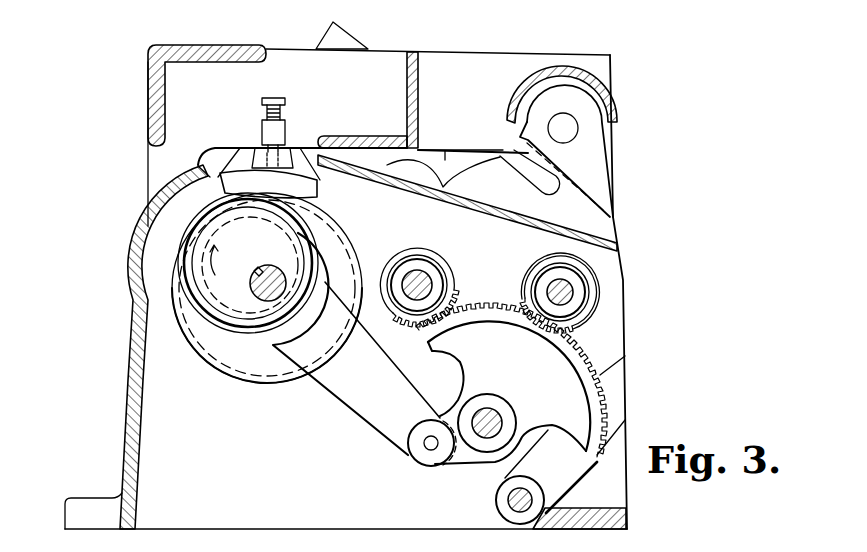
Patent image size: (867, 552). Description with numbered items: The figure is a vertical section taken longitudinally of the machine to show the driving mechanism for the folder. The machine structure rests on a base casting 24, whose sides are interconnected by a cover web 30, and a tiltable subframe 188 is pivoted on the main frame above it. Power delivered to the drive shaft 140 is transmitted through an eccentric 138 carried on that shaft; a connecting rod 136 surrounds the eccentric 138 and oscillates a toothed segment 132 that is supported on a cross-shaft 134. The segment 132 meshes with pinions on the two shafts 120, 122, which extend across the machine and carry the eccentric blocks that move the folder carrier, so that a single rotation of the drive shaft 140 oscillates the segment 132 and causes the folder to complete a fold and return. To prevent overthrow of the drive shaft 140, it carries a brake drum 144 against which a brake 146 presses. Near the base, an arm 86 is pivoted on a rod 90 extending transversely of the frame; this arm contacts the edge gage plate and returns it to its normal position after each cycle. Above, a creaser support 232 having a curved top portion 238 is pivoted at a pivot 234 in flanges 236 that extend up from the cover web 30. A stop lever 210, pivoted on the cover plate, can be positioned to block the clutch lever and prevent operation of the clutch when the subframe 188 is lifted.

The base casting 24 is at (626, 523).
The cover web 30 is at (570, 224).
The arm 86 is at (572, 466).
The rod 90 is at (508, 497).
The shaft 120 is at (562, 289).
The shaft 122 is at (416, 268).
The segment 132 is at (575, 358).
The cross-shaft 134 is at (488, 410).
The connecting rod 136 is at (342, 387).
The eccentric 138 is at (222, 313).
The drive shaft 140 is at (279, 268).
The brake drum 144 is at (257, 381).
The brake 146 is at (290, 180).
The tiltable subframe 188 is at (477, 60).
The stop lever 210 is at (338, 40).
The creaser support 232 is at (622, 135).
The pivot 234 is at (570, 130).
The flanges 236 is at (493, 175).
The curved top portion 238 is at (572, 73).